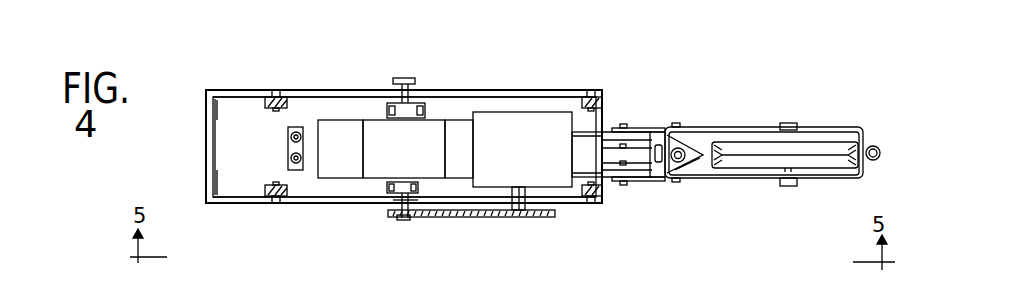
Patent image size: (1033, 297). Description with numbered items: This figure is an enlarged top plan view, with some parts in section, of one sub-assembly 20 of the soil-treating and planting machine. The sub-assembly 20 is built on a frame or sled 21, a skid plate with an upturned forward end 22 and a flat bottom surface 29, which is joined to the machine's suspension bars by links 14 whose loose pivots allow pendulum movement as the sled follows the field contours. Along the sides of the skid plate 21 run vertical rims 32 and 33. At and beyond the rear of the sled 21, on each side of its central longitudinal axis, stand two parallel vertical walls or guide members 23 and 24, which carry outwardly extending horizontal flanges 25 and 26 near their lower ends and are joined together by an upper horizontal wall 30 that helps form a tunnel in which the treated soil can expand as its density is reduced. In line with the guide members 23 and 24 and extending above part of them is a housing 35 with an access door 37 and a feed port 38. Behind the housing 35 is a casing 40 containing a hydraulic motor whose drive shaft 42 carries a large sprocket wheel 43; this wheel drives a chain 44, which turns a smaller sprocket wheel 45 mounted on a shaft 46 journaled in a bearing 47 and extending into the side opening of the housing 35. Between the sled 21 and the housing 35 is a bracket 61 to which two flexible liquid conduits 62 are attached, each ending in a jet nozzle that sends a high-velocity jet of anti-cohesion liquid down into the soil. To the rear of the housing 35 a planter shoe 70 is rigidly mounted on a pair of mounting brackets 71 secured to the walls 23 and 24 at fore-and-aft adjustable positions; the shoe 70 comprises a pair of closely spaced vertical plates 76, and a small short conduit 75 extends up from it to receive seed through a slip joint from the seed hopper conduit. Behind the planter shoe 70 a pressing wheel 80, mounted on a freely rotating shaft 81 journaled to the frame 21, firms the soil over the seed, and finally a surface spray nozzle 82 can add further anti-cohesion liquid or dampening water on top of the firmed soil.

The link 14 is at (270, 92).
The sub-assembly 20 is at (508, 78).
The frame or sled 21 is at (308, 103).
The upturned forward end 22 is at (227, 155).
The guide member 23 is at (643, 140).
The guide member 24 is at (638, 173).
The horizontal flange 25 is at (596, 134).
The horizontal flange 26 is at (607, 178).
The flat bottom surface 29 is at (348, 104).
The upper horizontal wall 30 is at (583, 158).
The vertical rim 32 is at (437, 92).
The vertical rim 33 is at (289, 200).
The housing 35 is at (416, 162).
The access door 37 is at (352, 162).
The feed port 38 is at (463, 148).
The casing 40 is at (550, 164).
The drive shaft 42 is at (510, 195).
The large sprocket wheel 43 is at (523, 220).
The chain 44 is at (455, 218).
The smaller sprocket wheel 45 is at (397, 218).
The shaft 46 is at (393, 201).
The bearing 47 is at (383, 187).
The bracket 61 is at (291, 159).
The flexible liquid conduit 62 is at (291, 136).
The planter shoe 70 is at (700, 120).
The mounting bracket 71 is at (633, 127).
The small short conduit 75 is at (688, 160).
The vertical plate 76 is at (700, 157).
The pressing wheel 80 is at (808, 147).
The freely rotating shaft 81 is at (787, 124).
The surface spray nozzle 82 is at (877, 146).